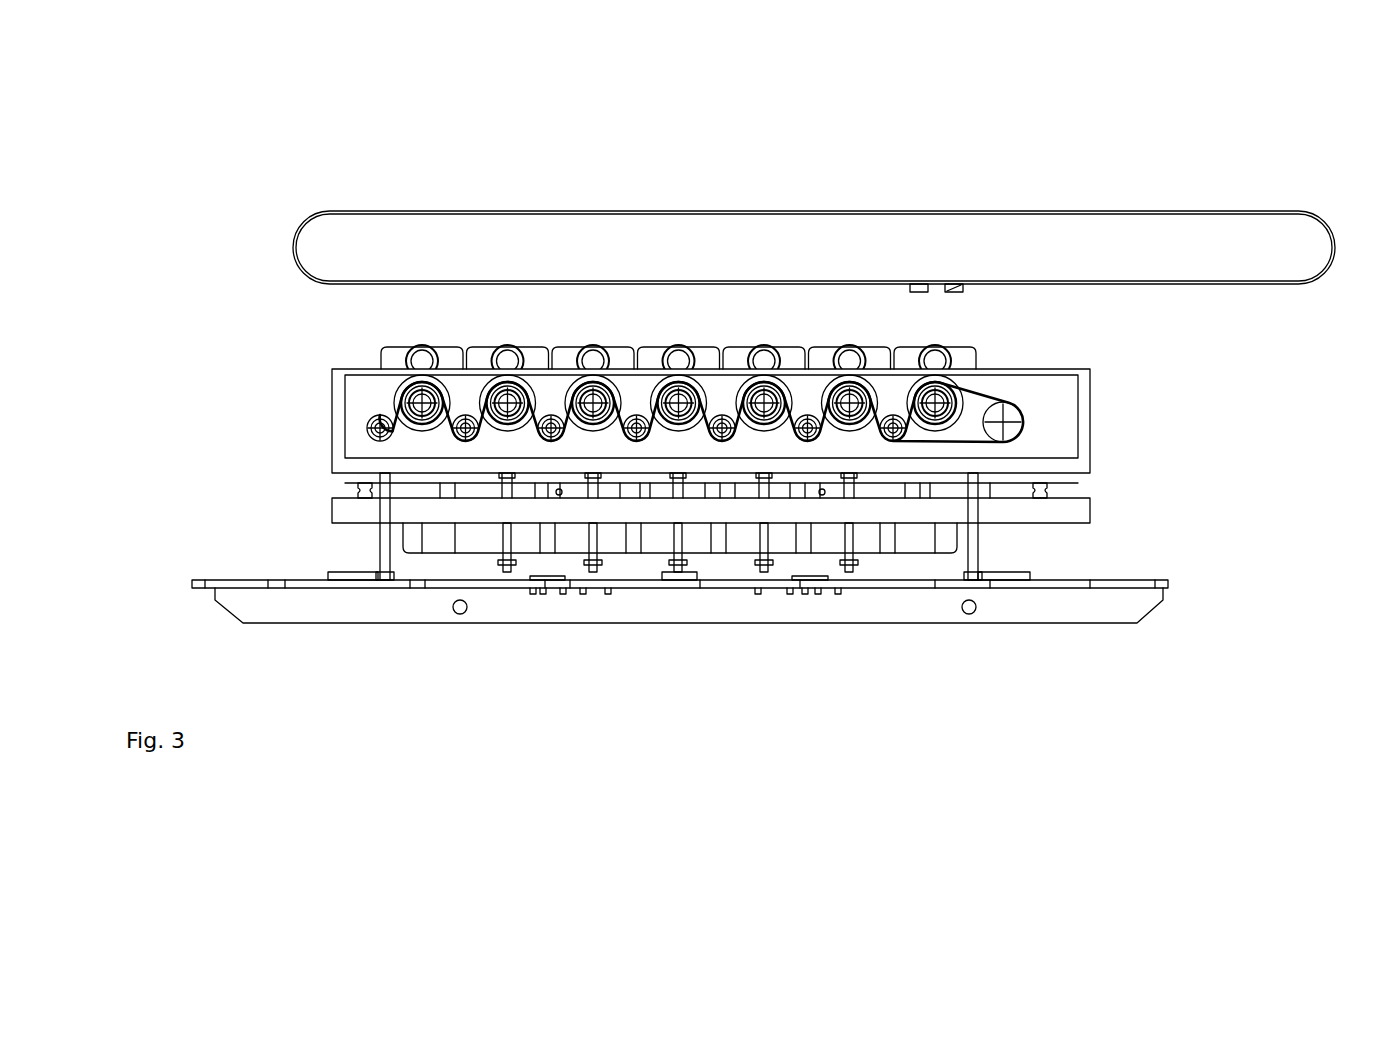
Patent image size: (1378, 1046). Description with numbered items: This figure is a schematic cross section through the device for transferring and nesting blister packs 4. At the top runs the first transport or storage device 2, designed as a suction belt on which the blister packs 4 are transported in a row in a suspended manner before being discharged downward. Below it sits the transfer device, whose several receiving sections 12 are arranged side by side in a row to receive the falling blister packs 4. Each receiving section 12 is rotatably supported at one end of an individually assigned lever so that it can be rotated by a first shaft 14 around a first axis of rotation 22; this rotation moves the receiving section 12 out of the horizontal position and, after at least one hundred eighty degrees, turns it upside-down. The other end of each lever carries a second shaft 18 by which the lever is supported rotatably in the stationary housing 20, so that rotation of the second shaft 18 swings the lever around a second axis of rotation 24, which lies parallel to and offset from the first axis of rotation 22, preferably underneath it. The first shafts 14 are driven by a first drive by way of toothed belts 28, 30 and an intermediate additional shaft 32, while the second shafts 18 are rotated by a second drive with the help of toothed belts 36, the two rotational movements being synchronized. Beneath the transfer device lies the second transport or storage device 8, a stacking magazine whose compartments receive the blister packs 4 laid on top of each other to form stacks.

The first transport or storage device 2 is at (868, 247).
The blister packs 4 is at (953, 288).
The second transport or storage device 8 is at (378, 549).
The receiving sections 12 is at (560, 357).
The first shaft 14 is at (497, 360).
The second shaft 18 is at (408, 407).
The stationary housing 20 is at (1093, 424).
The first axis of rotation 22 is at (678, 363).
The second axis of rotation 24 is at (880, 393).
The toothed belt 28 is at (1012, 438).
The toothed belt 30 is at (943, 360).
The intermediate additional shaft 32 is at (899, 430).
The toothed belts 36 is at (925, 437).